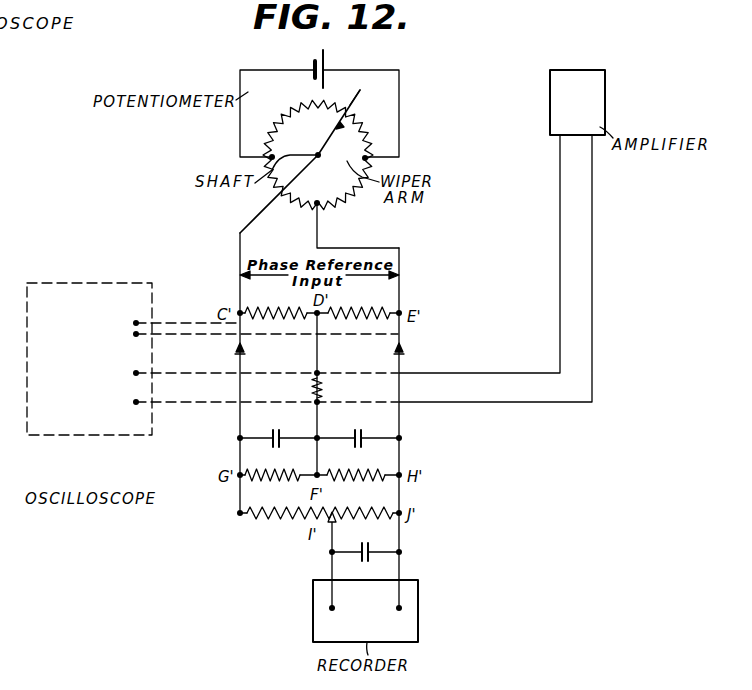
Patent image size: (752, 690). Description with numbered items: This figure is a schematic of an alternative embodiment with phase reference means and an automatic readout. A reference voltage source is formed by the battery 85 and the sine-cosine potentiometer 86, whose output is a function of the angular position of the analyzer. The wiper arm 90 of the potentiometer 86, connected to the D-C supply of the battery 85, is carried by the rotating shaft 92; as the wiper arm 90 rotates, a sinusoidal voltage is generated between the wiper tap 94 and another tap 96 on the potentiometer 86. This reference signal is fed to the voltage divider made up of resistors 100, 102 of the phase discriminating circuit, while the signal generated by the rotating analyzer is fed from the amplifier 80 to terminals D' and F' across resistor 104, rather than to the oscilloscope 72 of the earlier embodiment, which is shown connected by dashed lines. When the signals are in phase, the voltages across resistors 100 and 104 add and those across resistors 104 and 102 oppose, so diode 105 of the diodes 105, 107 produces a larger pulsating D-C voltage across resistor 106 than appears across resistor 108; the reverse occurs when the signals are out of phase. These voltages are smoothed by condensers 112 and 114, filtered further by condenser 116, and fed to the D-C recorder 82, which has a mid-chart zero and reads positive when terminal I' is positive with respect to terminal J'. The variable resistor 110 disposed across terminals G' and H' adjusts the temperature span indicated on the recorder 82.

The oscilloscope 72 is at (80, 435).
The amplifier 80 is at (600, 103).
The D-C recorder 82 is at (365, 611).
The battery 85 is at (327, 64).
The potentiometer 86 is at (287, 111).
The wiper arm 90 is at (336, 137).
The rotating shaft 92 is at (316, 154).
The wiper tap 94 is at (366, 94).
The tap 96 is at (318, 207).
The resistor 100 is at (278, 316).
The resistor 102 is at (357, 316).
The resistor 104 is at (323, 388).
The diode 105 is at (236, 352).
The diode 107 is at (401, 353).
The condenser 112 is at (290, 420).
The condenser 114 is at (372, 420).
The resistor 106 is at (295, 478).
The resistor 108 is at (378, 478).
The variable resistor 110 is at (284, 517).
The condenser 116 is at (372, 547).